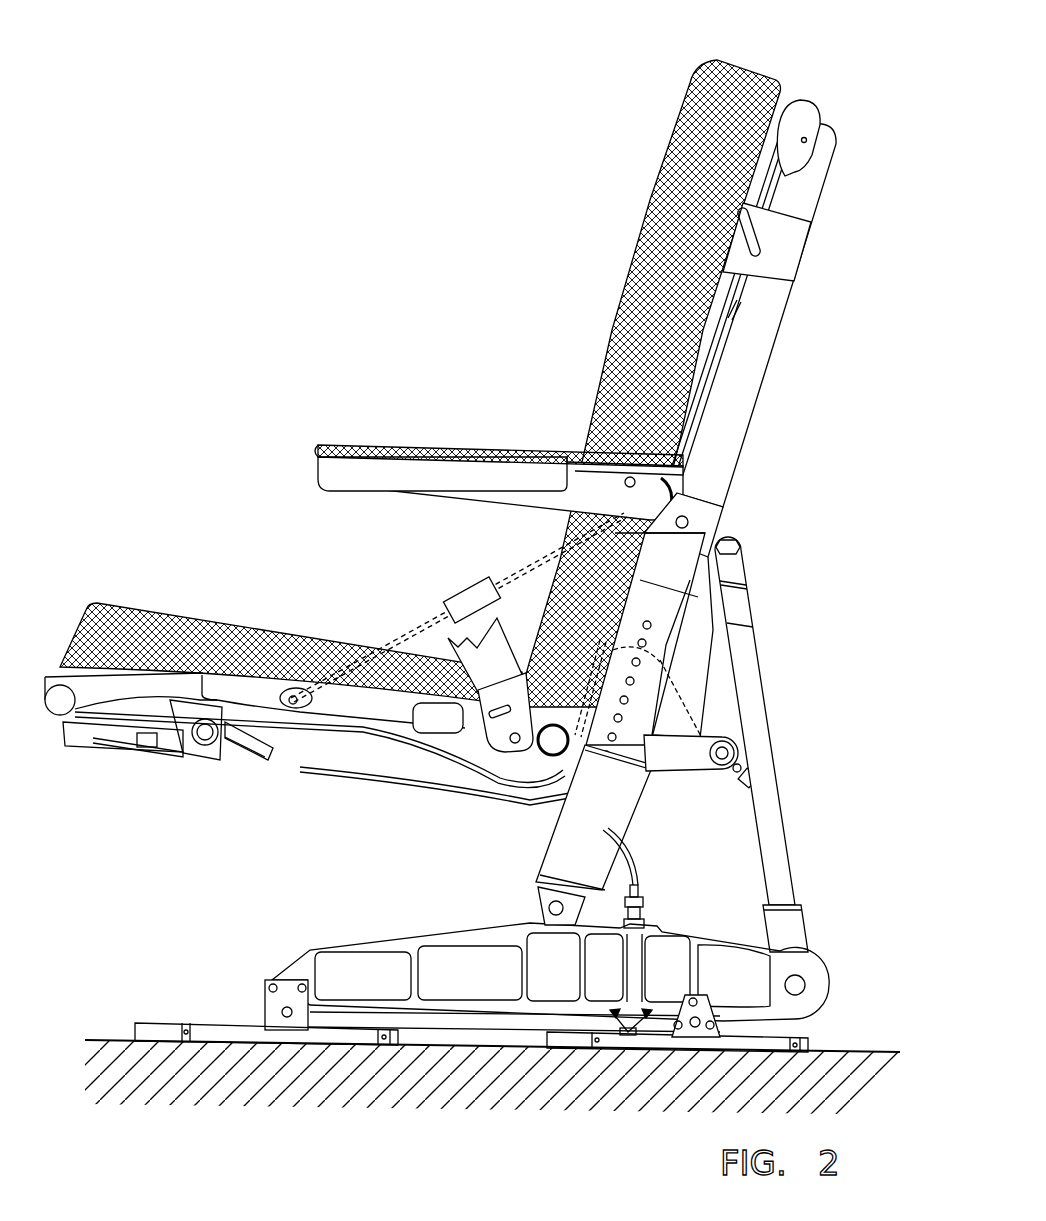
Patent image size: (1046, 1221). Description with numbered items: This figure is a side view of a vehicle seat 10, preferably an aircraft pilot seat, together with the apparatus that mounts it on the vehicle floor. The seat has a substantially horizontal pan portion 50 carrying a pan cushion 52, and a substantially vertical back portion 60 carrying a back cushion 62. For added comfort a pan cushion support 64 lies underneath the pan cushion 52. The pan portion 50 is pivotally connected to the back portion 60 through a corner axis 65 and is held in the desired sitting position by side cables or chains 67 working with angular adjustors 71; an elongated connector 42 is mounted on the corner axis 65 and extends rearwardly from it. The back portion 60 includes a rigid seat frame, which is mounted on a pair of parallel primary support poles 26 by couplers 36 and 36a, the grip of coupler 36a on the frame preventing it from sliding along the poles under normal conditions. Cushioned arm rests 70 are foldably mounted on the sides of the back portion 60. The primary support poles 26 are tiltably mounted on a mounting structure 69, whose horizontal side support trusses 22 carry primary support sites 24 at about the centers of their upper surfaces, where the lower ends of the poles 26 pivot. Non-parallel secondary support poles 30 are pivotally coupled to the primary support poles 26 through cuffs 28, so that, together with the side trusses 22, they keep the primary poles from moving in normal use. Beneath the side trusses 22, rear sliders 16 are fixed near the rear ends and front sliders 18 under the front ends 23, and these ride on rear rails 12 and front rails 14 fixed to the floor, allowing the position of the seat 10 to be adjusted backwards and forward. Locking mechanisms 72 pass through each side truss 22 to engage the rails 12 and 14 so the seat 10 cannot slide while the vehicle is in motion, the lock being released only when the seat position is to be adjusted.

The vehicle seat 10 is at (400, 293).
The rear rails 12 is at (810, 1043).
The front rails 14 is at (220, 1030).
The rear sliders 16 is at (767, 1018).
The front sliders 18 is at (270, 1002).
The side support trusses 22 is at (380, 950).
The front ends 23 is at (307, 950).
The primary support sites 24 is at (533, 915).
The primary support poles 26 is at (558, 857).
The cuffs 28 is at (708, 513).
The secondary support poles 30 is at (757, 740).
The coupler 36 is at (788, 250).
The coupler 36a is at (640, 705).
The elongated connector 42 is at (757, 800).
The pan portion 50 is at (193, 523).
The pan cushion 52 is at (113, 610).
The back portion 60 is at (513, 62).
The back cushion 62 is at (693, 72).
The pan cushion support 64 is at (363, 727).
The corner axis 65 is at (497, 787).
The side cables or chains 67 is at (407, 630).
The mounting structure 69 is at (183, 857).
The cushioned arm rests 70 is at (450, 442).
The angular adjustors 71 is at (470, 597).
The locking mechanisms 72 is at (652, 908).